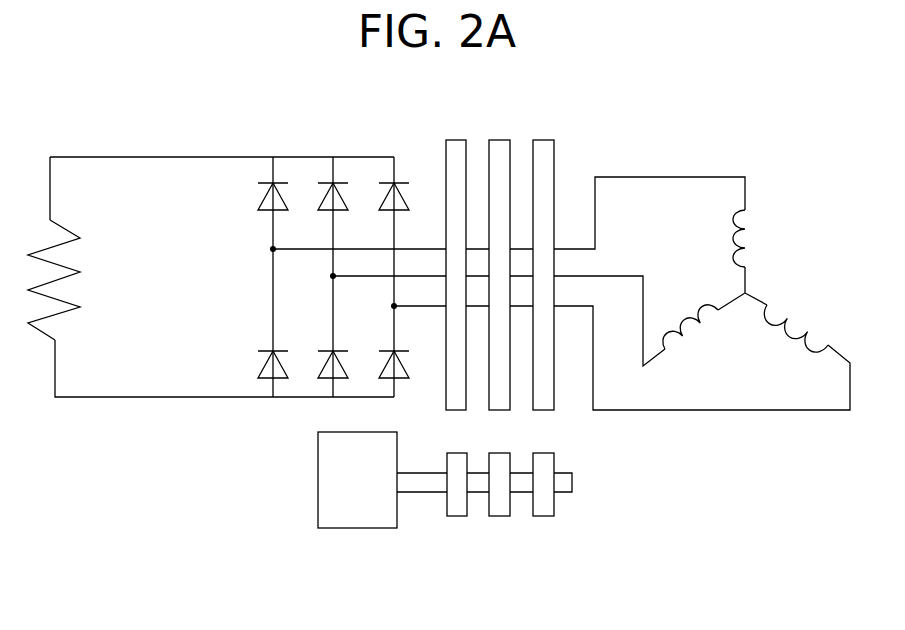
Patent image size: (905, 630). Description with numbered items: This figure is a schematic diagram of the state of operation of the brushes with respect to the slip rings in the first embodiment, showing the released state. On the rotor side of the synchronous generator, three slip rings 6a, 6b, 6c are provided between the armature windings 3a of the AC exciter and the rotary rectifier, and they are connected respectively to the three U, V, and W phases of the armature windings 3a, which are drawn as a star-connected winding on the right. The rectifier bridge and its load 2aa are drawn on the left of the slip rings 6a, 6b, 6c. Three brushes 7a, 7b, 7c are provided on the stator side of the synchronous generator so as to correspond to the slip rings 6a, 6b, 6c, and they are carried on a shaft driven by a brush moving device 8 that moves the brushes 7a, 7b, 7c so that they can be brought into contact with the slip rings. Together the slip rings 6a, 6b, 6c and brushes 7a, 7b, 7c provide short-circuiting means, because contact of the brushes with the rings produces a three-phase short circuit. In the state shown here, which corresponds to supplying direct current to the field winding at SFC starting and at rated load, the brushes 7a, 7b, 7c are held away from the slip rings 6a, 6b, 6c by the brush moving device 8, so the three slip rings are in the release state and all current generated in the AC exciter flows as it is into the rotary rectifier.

The load resistor 2aa is at (70, 265).
The slip ring 6a is at (455, 160).
The slip ring 6b is at (502, 160).
The slip ring 6c is at (545, 160).
The armature windings 3a is at (743, 225).
The brush 7a is at (457, 516).
The brush 7b is at (500, 516).
The brush 7c is at (543, 516).
The brush moving device 8 is at (356, 512).